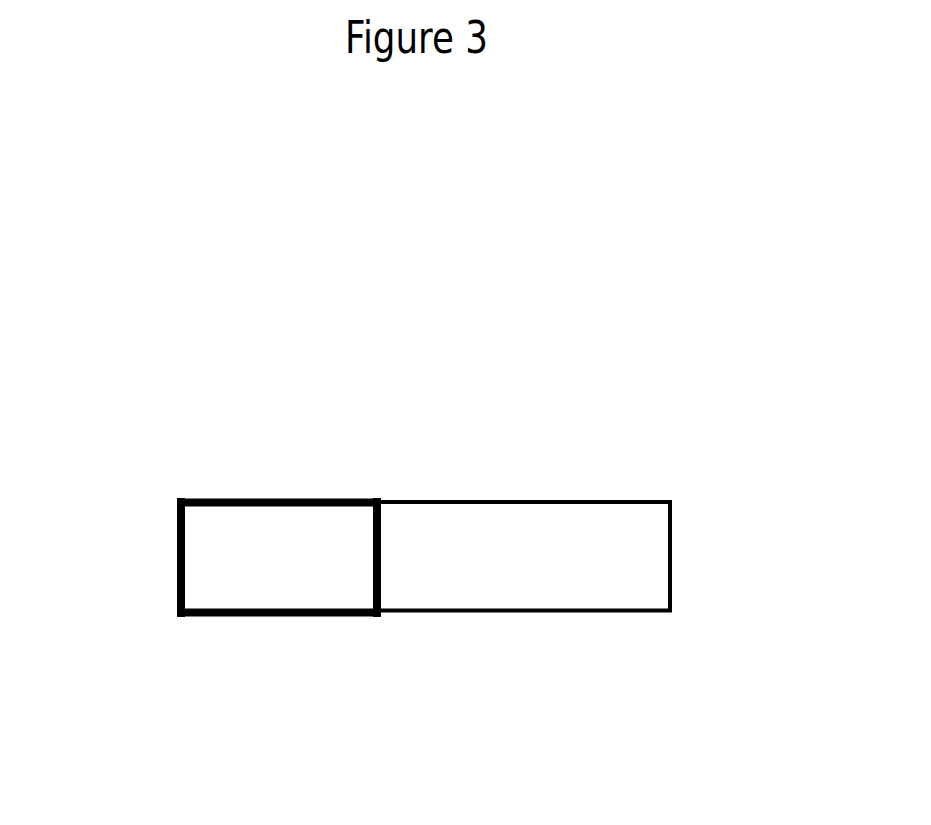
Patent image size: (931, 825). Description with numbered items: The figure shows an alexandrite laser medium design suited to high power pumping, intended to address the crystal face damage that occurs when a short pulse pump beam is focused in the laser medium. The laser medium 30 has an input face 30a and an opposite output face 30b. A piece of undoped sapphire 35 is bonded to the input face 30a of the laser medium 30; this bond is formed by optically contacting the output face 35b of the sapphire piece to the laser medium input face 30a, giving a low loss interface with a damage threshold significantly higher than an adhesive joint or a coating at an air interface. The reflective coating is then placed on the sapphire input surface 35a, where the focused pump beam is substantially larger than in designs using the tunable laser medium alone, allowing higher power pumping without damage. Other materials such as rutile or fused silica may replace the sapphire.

The laser medium 30 is at (508, 468).
The input face of the laser medium 30a is at (400, 582).
The output face of the laser medium 30b is at (699, 566).
The undoped sapphire 35 is at (280, 468).
The sapphire input surface 35a is at (153, 578).
The output face of the sapphire piece 35b is at (350, 568).